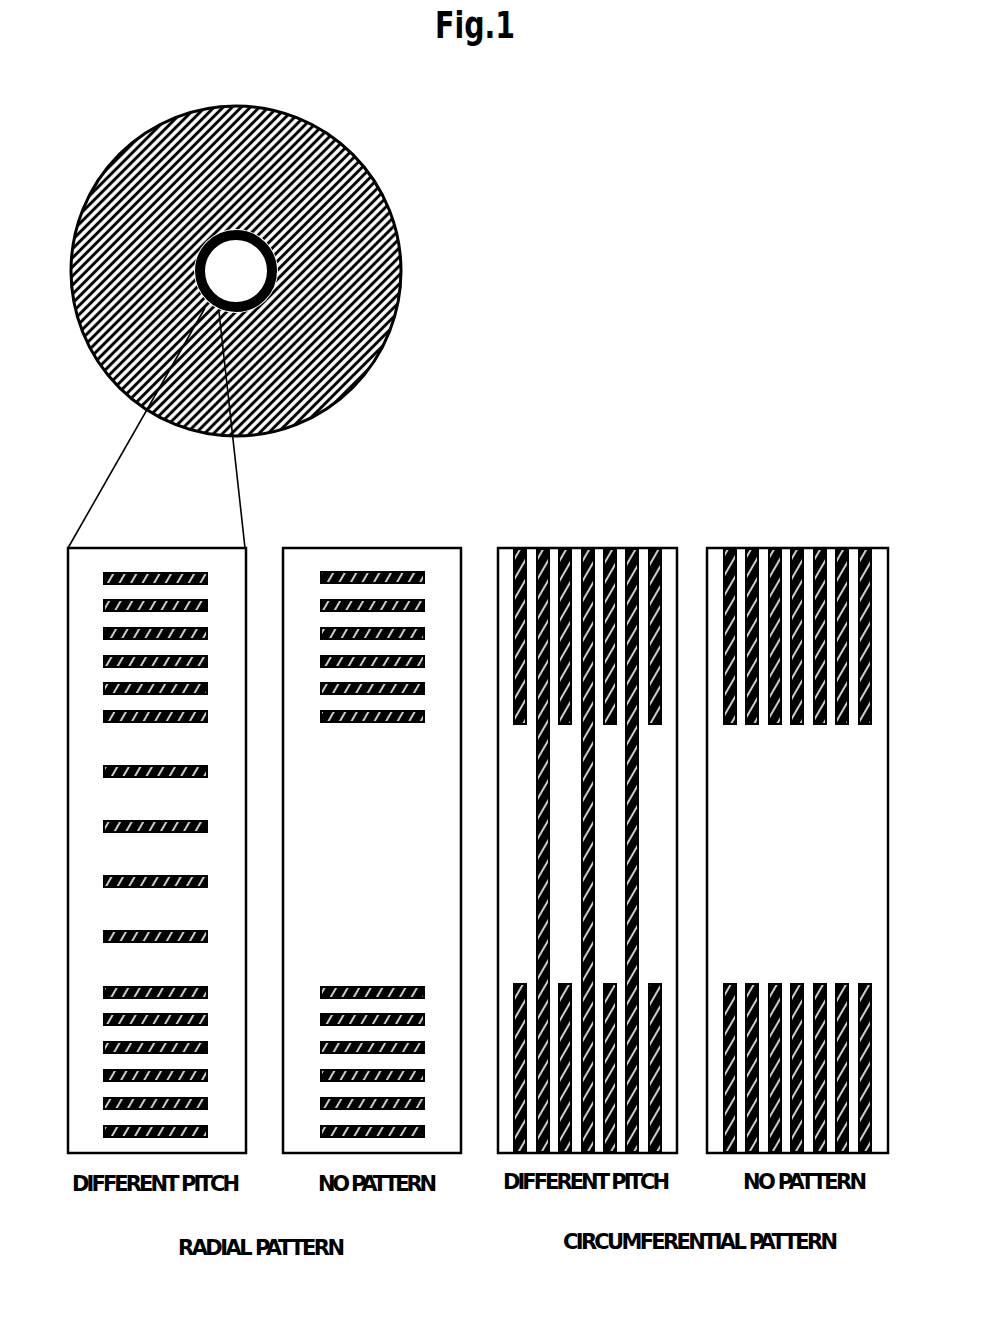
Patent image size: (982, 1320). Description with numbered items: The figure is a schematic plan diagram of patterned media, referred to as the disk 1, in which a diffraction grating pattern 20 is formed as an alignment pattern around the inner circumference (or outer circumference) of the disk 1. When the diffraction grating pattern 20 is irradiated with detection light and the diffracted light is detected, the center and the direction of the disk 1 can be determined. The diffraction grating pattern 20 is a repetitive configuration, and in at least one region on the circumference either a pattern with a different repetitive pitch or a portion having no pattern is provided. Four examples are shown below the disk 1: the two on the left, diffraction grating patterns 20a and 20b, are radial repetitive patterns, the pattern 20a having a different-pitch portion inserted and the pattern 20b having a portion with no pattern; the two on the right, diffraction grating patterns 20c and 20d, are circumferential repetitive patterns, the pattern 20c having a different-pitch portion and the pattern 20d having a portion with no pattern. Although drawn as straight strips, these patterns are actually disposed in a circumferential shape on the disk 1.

The patterned media (disk) 1 is at (370, 367).
The diffraction grating pattern 20 is at (215, 232).
The diffraction grating pattern 20a is at (163, 571).
The diffraction grating pattern 20b is at (375, 571).
The diffraction grating pattern 20c is at (588, 548).
The diffraction grating pattern 20d is at (800, 548).